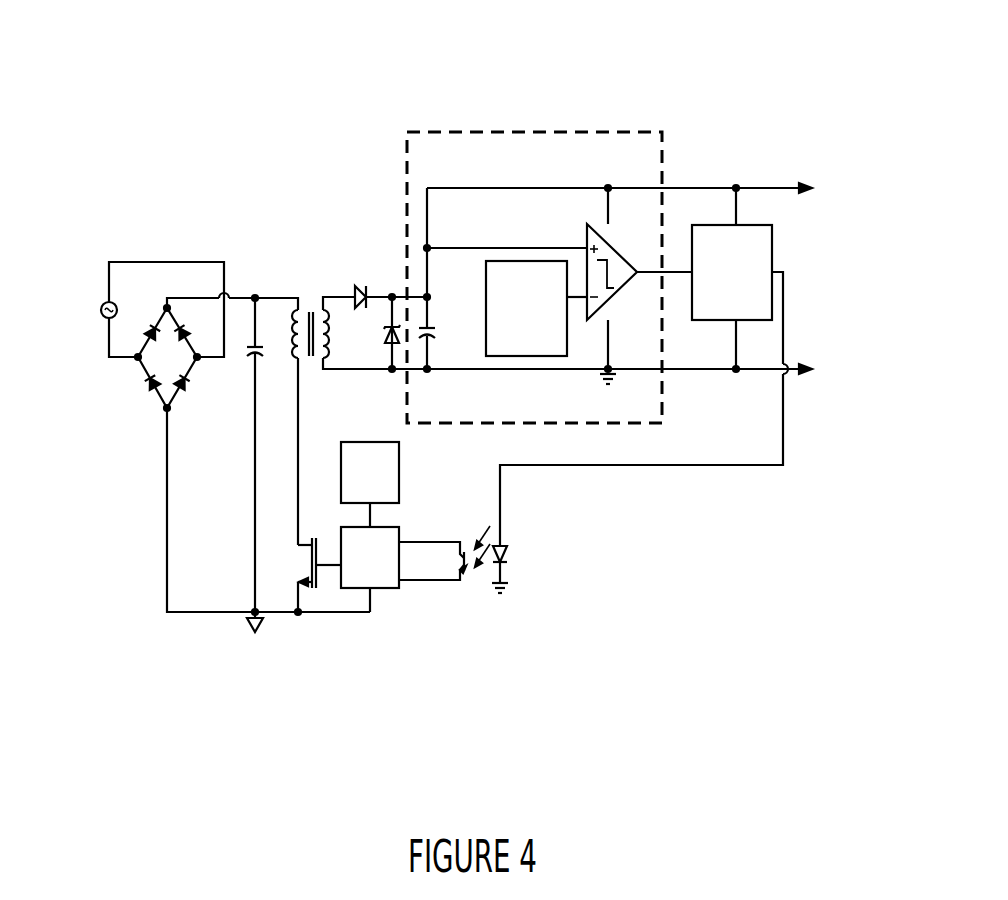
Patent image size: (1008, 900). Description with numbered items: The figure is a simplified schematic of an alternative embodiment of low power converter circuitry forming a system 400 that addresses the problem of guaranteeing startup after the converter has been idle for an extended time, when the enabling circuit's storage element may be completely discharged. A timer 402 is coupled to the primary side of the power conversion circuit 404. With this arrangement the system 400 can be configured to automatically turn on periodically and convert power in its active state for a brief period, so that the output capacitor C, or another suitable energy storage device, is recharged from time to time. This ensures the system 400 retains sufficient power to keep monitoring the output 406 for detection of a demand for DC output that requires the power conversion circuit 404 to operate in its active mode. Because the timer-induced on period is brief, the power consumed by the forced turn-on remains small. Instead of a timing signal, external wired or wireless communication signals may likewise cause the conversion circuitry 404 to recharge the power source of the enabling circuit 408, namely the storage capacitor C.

The system 400 is at (472, 678).
The timer 402 is at (354, 486).
The power conversion circuit 404 is at (300, 108).
The output 406 is at (677, 389).
The enabling circuit 408 is at (470, 128).
The output capacitor C is at (440, 280).